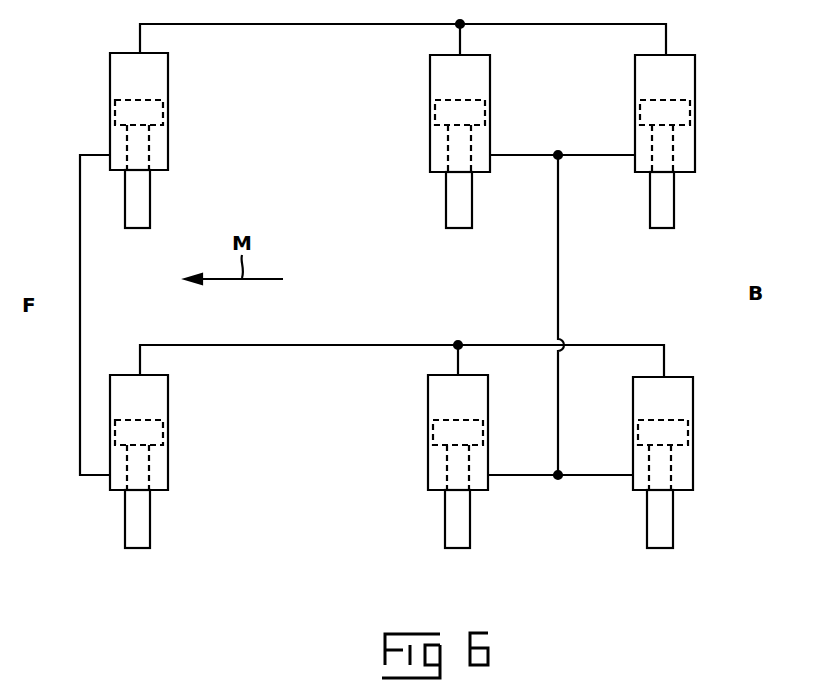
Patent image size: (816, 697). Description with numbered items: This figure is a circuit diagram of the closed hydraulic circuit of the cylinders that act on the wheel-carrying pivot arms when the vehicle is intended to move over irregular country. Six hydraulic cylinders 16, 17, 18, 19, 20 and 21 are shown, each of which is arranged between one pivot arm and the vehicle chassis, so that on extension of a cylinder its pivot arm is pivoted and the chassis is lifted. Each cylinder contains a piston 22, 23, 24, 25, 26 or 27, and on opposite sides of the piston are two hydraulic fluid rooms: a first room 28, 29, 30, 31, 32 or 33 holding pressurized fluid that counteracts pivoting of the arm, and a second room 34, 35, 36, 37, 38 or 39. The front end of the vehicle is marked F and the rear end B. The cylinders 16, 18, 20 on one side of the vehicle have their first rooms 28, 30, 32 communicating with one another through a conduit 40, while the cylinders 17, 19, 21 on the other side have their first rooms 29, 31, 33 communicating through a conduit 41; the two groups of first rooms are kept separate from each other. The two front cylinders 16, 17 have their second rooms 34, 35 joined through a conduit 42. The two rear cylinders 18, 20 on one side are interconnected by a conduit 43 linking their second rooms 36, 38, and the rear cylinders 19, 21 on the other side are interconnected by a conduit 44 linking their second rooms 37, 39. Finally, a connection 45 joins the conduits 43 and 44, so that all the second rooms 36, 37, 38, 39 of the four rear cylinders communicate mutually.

The hydraulic cylinder 16 is at (139, 461).
The hydraulic cylinder 17 is at (158, 140).
The hydraulic cylinder 18 is at (428, 461).
The hydraulic cylinder 19 is at (420, 136).
The hydraulic cylinder 20 is at (681, 462).
The hydraulic cylinder 21 is at (686, 141).
The piston 22 is at (126, 430).
The piston 23 is at (126, 108).
The piston 24 is at (470, 432).
The piston 25 is at (472, 110).
The piston 26 is at (640, 432).
The piston 27 is at (645, 103).
The first hydraulic fluid room 28 is at (153, 405).
The first hydraulic fluid room 29 is at (152, 77).
The first hydraulic fluid room 30 is at (440, 392).
The first hydraulic fluid room 31 is at (445, 72).
The first hydraulic fluid room 32 is at (678, 400).
The first hydraulic fluid room 33 is at (682, 76).
The second hydraulic fluid room 34 is at (158, 478).
The second hydraulic fluid room 35 is at (157, 156).
The second hydraulic fluid room 36 is at (437, 473).
The second hydraulic fluid room 37 is at (437, 143).
The second hydraulic fluid room 38 is at (683, 475).
The second hydraulic fluid room 39 is at (683, 152).
The conduit 40 is at (342, 345).
The conduit 41 is at (330, 26).
The conduit 42 is at (80, 311).
The conduit 43 is at (578, 478).
The conduit 44 is at (535, 157).
The connection 45 is at (558, 290).